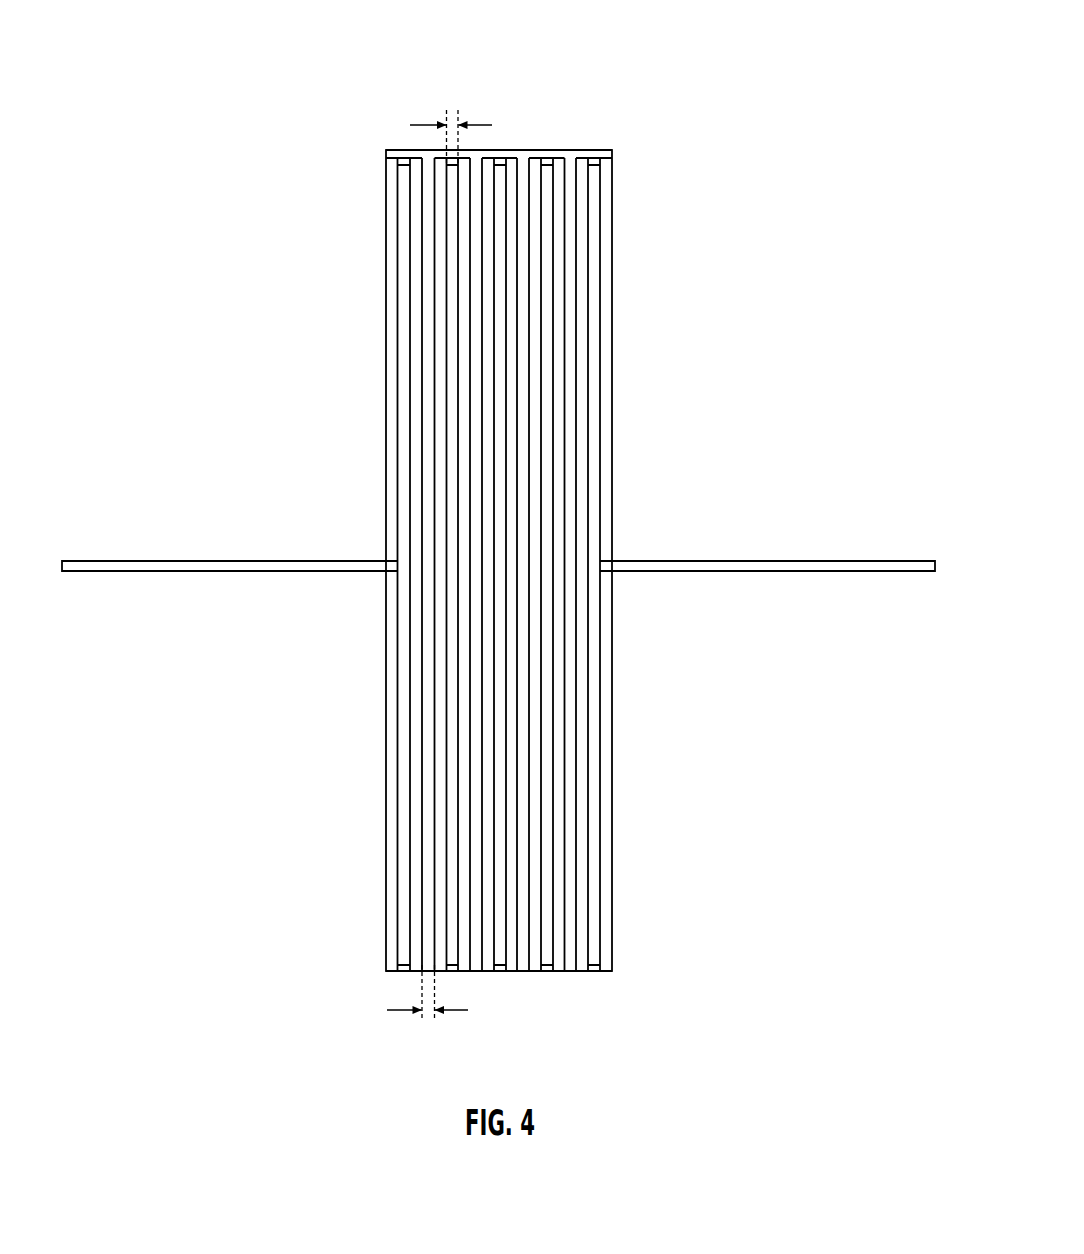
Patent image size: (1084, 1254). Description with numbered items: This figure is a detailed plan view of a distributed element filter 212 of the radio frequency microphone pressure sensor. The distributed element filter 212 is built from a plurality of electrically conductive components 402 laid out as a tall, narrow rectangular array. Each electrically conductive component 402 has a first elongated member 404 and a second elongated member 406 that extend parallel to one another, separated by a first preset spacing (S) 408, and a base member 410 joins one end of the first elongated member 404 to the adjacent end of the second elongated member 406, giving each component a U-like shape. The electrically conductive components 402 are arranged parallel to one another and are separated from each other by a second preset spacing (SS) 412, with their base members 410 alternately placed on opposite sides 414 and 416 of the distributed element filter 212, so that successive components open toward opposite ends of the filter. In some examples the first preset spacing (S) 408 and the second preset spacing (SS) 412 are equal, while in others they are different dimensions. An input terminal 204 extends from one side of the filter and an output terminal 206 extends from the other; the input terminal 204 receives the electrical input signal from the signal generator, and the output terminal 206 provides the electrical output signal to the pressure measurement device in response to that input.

The electrically conductive component 402 is at (568, 68).
The first elongated member 404 is at (434, 162).
The second elongated member 406 is at (470, 168).
The first preset spacing (S) 408 is at (454, 94).
The base member 410 is at (397, 157).
The second preset spacing (SS) 412 is at (426, 1026).
The side of the distributed element filter 414 is at (590, 150).
The opposite side of the distributed element filter 416 is at (595, 971).
The distributed element filter 212 is at (630, 246).
The input terminal 204 is at (140, 561).
The output terminal 206 is at (855, 561).